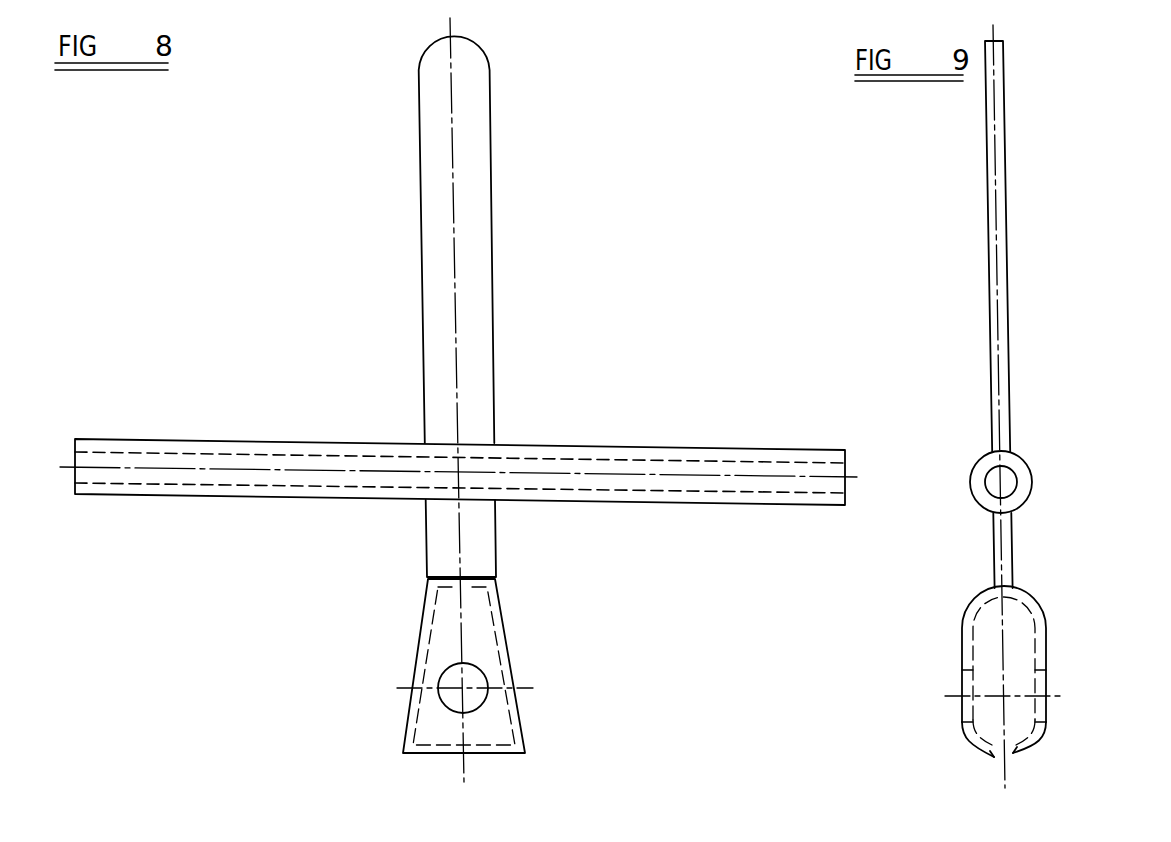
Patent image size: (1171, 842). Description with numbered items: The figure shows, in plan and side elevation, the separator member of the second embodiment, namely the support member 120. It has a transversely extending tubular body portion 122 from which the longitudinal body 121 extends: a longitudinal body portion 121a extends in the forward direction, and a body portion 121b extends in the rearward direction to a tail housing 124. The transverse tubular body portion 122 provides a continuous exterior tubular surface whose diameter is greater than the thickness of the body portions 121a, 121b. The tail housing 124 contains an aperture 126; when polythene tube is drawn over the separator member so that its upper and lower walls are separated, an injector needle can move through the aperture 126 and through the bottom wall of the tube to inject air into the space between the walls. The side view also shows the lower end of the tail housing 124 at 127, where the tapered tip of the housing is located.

In FIG. 9, the support member 120 is at (1020, 235).
In FIG. 9, the longitudinal body 121 is at (1005, 152).
In FIG. 8, the longitudinal body portion 121a is at (489, 145).
In FIG. 8, the body portion 121b is at (496, 530).
In FIG. 8, the transversely extending tubular body portion 122 is at (735, 450).
In FIG. 9, the transversely extending tubular body portion 122 is at (1022, 490).
In FIG. 8, the tail housing 124 is at (524, 738).
In FIG. 9, the tail housing 124 is at (1046, 660).
In FIG. 8, the aperture 126 is at (450, 708).
In FIG. 9, the tip 127 is at (1010, 757).